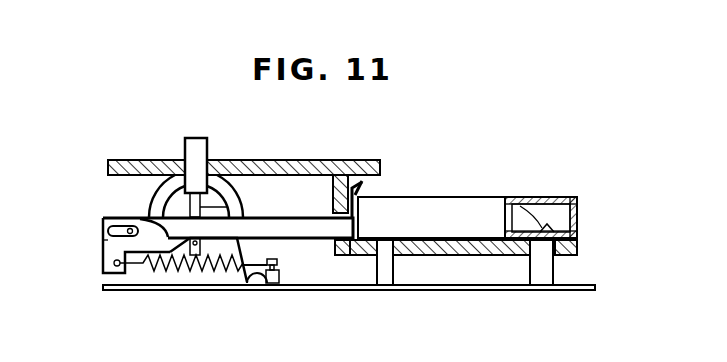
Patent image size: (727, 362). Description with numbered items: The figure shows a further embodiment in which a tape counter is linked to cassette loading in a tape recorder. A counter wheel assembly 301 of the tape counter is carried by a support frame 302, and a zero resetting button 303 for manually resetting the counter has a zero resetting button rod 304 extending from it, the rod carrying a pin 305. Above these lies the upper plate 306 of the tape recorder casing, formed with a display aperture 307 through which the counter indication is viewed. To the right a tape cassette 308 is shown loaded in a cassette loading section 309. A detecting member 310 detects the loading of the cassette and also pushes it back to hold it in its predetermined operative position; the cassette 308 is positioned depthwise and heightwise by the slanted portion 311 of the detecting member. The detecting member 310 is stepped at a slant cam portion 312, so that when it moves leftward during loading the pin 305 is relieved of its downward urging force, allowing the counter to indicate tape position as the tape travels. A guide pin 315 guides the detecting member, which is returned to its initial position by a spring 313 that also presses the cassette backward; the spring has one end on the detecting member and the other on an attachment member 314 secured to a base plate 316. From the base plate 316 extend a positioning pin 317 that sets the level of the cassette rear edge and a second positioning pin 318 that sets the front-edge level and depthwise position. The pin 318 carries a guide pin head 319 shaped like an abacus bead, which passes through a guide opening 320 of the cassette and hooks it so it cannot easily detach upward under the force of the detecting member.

The counter wheel assembly 301 is at (162, 197).
The support frame 302 is at (163, 275).
The zero resetting button 303 is at (218, 133).
The zero resetting button rod 304 is at (227, 200).
The pin 305 is at (193, 277).
The upper plate 306 is at (281, 160).
The display aperture 307 is at (187, 160).
The tape cassette 308 is at (468, 203).
The cassette loading section 309 is at (384, 198).
The detecting member 310 is at (300, 238).
The slanted portion 311 is at (359, 196).
The slant cam portion 312 is at (104, 224).
The spring 313 is at (255, 272).
The attachment member 314 is at (275, 283).
The guide pin 315 is at (103, 240).
The base plate 316 is at (470, 291).
The positioning pin 317 is at (385, 285).
The positioning pin 318 is at (545, 290).
The guide pin head 319 is at (523, 180).
The guide opening 320 is at (548, 227).